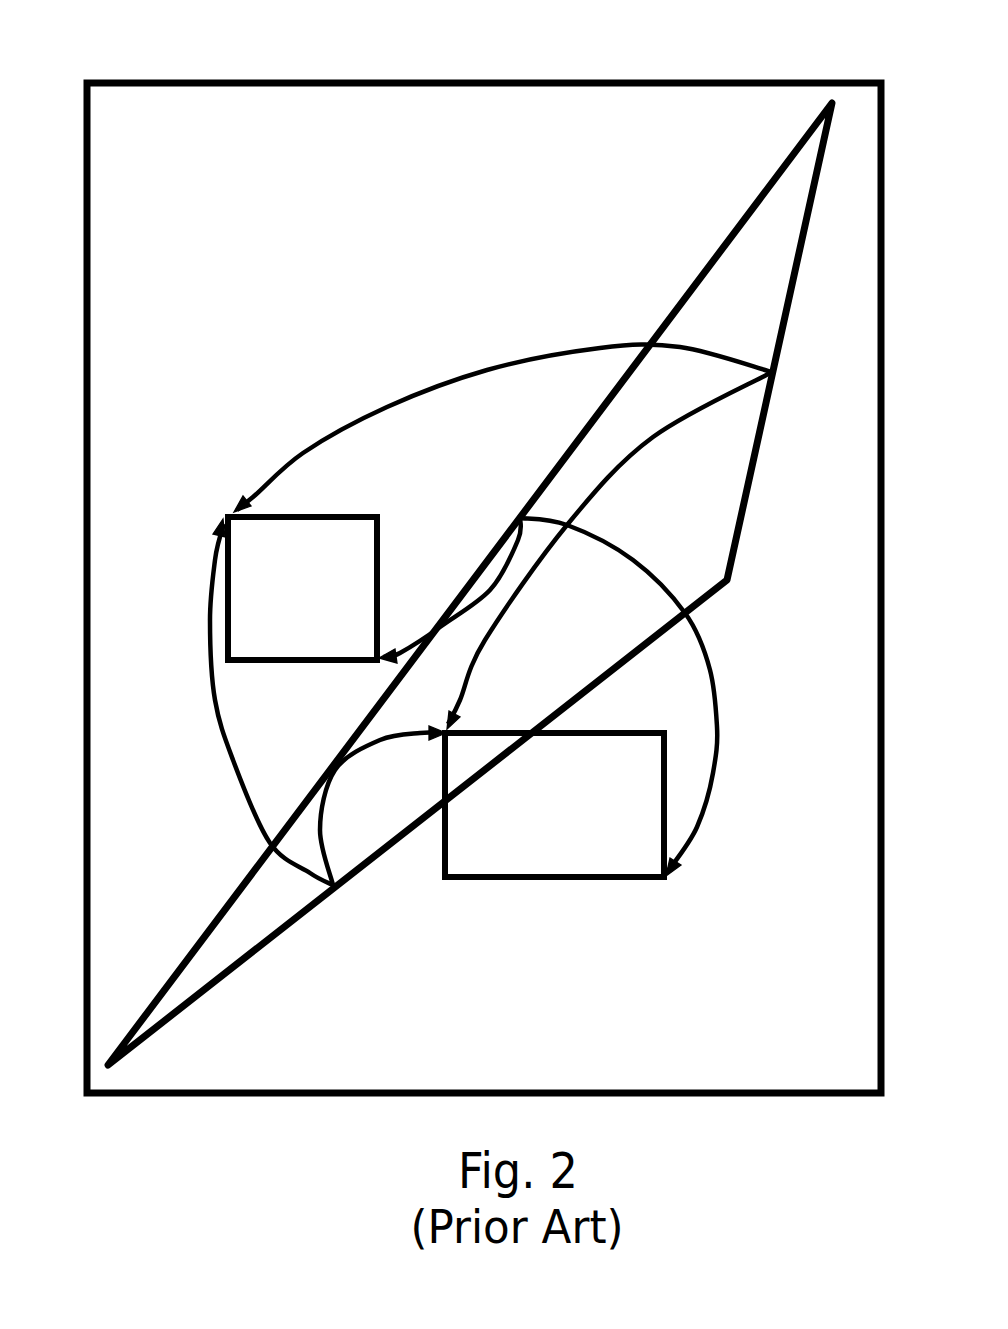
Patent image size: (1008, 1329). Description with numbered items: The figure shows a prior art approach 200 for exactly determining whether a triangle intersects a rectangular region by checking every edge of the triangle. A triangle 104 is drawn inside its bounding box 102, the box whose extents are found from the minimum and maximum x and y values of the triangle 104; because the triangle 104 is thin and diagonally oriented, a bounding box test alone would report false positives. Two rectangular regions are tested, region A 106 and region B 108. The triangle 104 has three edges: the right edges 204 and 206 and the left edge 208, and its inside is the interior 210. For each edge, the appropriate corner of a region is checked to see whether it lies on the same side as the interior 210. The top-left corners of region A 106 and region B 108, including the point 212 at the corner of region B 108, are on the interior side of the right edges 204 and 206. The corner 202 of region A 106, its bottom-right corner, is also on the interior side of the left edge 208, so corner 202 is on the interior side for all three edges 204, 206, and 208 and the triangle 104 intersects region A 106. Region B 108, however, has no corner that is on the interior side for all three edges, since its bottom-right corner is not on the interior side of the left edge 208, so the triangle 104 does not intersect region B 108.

The bounding box 102 is at (162, 1097).
The triangle 104 is at (230, 972).
The region A 106 is at (537, 879).
The region B 108 is at (335, 512).
The prior art rendering diagram 200 is at (749, 61).
The corner of region A 202 is at (445, 732).
The right edge of the triangle 204 is at (778, 368).
The right edge of the triangle 206 is at (317, 903).
The left edge of the triangle 208 is at (537, 492).
The interior of the triangle 210 is at (647, 522).
The arrows meeting at corner of box B 212 is at (228, 517).